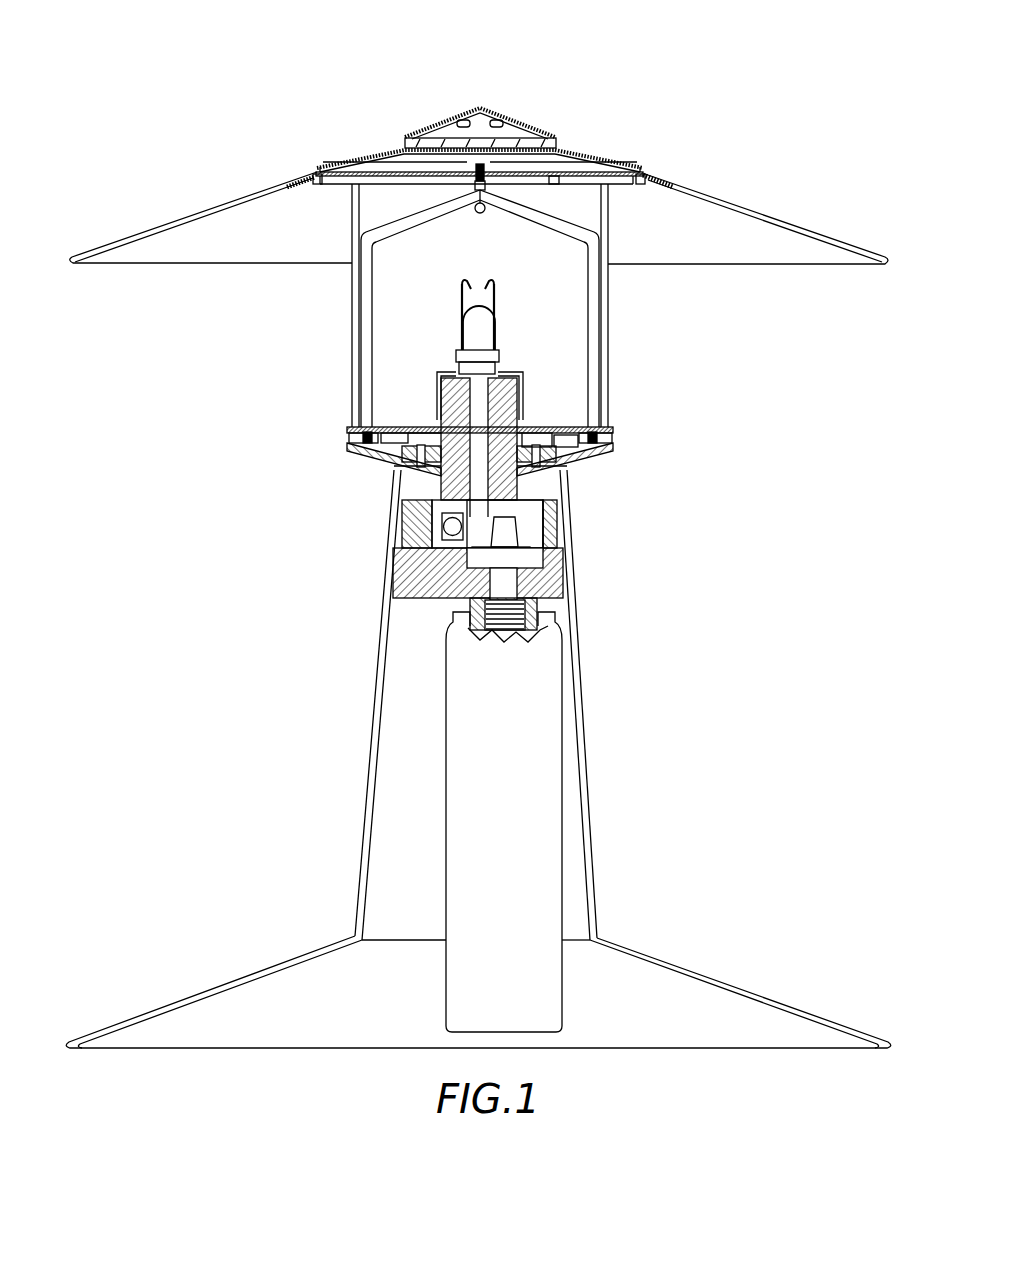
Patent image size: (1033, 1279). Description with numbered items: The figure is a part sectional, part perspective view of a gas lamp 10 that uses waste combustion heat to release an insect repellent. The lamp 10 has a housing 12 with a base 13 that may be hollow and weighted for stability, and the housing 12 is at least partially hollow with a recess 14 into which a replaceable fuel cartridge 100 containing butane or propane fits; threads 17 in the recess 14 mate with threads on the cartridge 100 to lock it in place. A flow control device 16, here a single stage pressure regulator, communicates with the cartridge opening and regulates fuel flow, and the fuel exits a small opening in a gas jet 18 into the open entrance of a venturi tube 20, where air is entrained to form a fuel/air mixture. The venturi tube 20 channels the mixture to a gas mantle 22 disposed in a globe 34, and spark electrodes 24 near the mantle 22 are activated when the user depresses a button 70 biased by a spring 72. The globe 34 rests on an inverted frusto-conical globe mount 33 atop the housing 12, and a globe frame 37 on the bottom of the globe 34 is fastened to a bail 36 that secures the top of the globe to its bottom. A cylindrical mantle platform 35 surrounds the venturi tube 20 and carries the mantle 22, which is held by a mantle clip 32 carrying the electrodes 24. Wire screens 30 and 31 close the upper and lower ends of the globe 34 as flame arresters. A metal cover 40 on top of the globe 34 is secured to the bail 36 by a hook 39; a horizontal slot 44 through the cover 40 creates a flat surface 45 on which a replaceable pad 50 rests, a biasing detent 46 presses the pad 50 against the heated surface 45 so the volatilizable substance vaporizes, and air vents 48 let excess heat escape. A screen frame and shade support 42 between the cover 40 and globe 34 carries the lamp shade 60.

The lamp 10 is at (146, 805).
The housing 12 is at (577, 683).
The base 13 is at (697, 977).
The recess 14 is at (393, 822).
The flow control device 16 is at (563, 577).
The threads 17 is at (507, 623).
The gas jet 18 is at (482, 539).
The venturi tube 20 is at (477, 487).
The gas mantle 22 is at (457, 361).
The spark electrodes 24 is at (463, 283).
The wire screen 30 is at (392, 425).
The wire screen 31 is at (555, 177).
The mantle clip 32 is at (523, 388).
The globe mount 33 is at (590, 457).
The globe 34 is at (607, 343).
The mantle platform 35 is at (518, 423).
The bail 36 is at (593, 303).
The globe frame 37 is at (610, 430).
The hook 39 is at (310, 177).
The cover 40 is at (352, 150).
The screen frame and shade support 42 is at (715, 162).
The slot 44 is at (398, 140).
The flat surface 45 is at (565, 145).
The biasing detent 46 is at (480, 137).
The air vents 48 is at (500, 125).
The pad 50 is at (555, 139).
The lamp shade 60 is at (795, 224).
The button 70 is at (437, 540).
The spring 72 is at (395, 515).
The fuel cartridge 100 is at (540, 788).